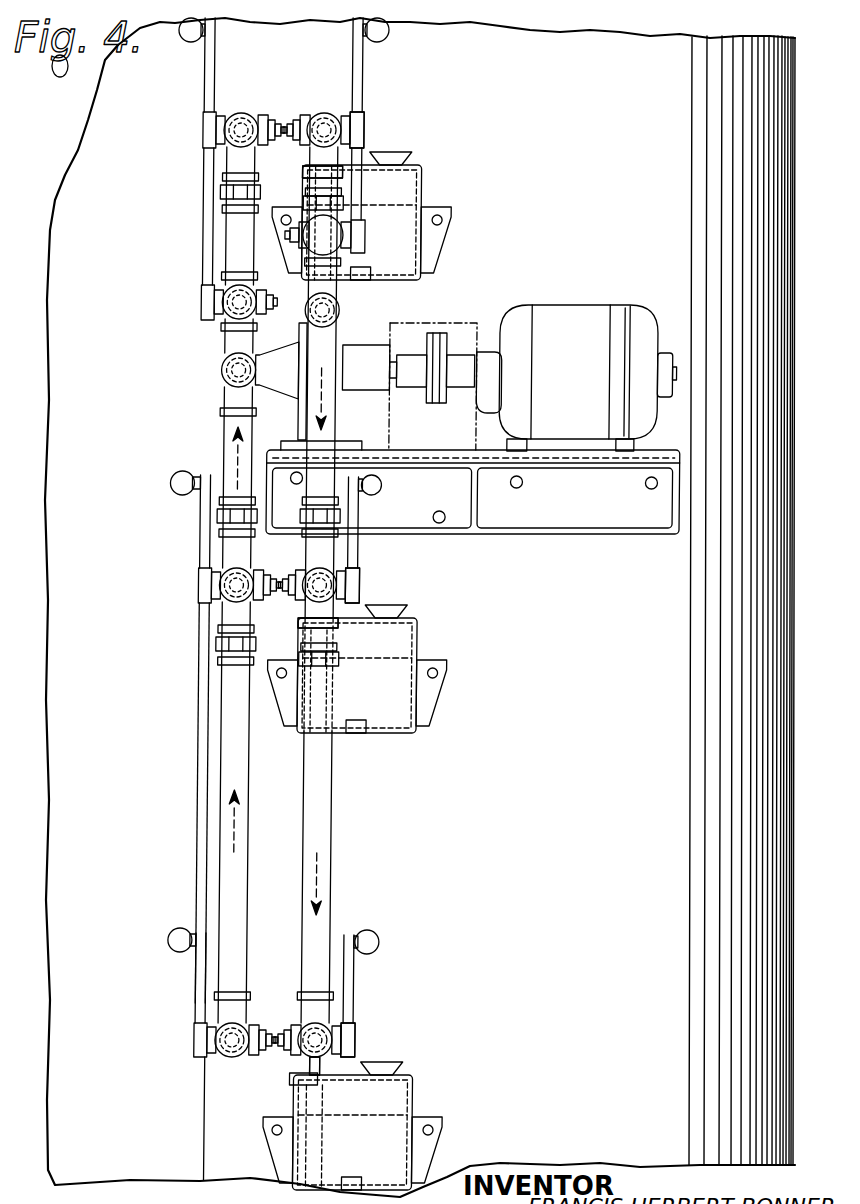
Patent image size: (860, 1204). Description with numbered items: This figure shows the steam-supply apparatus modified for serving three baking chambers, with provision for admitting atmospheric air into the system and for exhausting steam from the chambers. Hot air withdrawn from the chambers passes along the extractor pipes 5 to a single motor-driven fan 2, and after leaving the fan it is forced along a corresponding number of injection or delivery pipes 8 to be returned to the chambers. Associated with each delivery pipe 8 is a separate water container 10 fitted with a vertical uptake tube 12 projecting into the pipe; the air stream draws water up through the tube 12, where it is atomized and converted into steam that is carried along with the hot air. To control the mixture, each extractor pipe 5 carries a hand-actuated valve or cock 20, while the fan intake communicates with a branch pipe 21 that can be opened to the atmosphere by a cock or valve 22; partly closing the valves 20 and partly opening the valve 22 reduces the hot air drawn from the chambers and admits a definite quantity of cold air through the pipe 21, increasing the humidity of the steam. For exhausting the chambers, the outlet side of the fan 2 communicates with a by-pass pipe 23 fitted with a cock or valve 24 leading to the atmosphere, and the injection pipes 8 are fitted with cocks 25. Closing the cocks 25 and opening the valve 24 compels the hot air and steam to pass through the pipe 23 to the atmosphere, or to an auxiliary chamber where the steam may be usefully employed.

The motor-driven fan 2 is at (302, 432).
The extractor pipes 5 is at (255, 250).
The injection or delivery pipes 8 is at (326, 113).
The water container 10 is at (410, 200).
The vertical uptake tube 12 is at (308, 163).
The hand-actuated valve or cock 20 is at (203, 131).
The branch pipe 21 is at (233, 341).
The cock or valve 22 is at (203, 300).
The by-pass pipe 23 is at (342, 304).
The cock or valve 24 is at (368, 235).
The cocks 25 is at (366, 132).